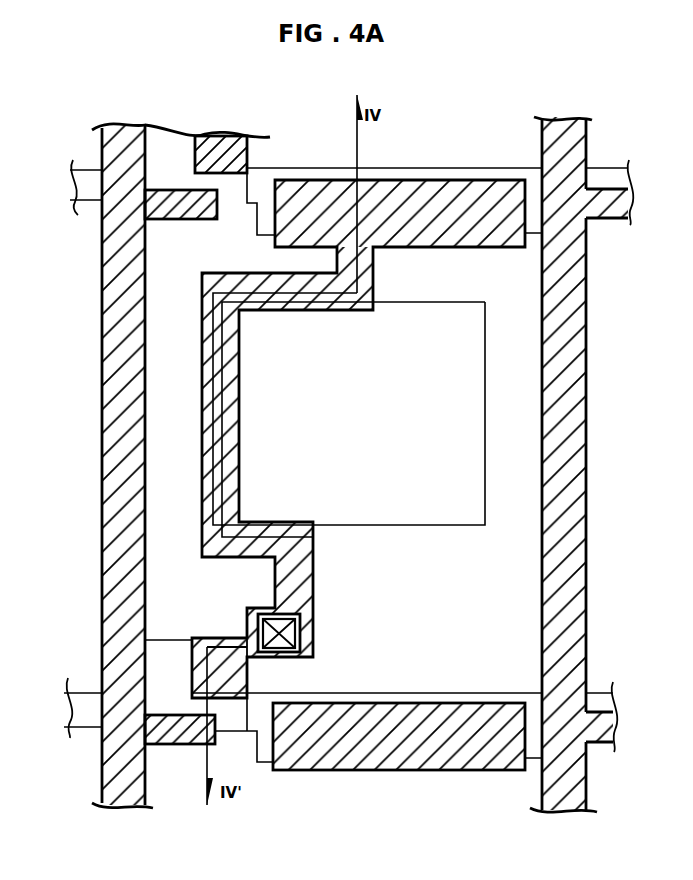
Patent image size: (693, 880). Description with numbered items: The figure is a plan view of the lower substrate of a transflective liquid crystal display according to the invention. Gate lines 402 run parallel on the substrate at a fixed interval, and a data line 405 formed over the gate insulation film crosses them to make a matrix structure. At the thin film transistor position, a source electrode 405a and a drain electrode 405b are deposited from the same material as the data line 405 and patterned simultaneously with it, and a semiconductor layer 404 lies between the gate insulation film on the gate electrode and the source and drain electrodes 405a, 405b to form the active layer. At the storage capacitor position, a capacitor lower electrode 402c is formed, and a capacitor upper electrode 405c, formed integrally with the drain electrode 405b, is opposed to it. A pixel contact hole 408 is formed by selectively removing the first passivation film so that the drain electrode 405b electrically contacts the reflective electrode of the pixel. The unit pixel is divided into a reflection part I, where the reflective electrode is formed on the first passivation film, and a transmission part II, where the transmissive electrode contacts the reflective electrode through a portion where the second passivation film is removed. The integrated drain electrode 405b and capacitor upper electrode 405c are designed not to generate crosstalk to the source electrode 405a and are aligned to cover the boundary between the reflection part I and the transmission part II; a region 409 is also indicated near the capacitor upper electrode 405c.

The gate line 402 is at (79, 200).
The capacitor lower electrode 402c is at (263, 752).
The semiconductor layer 404 is at (168, 655).
The data line 405 is at (122, 422).
The source electrode 405a is at (173, 740).
The drain electrode 405b is at (308, 573).
The capacitor upper electrode 405c is at (465, 773).
The pixel contact hole 408 is at (313, 647).
The storage capacitor region 409 is at (432, 717).
The reflection part I is at (423, 409).
The transmission part II is at (431, 419).